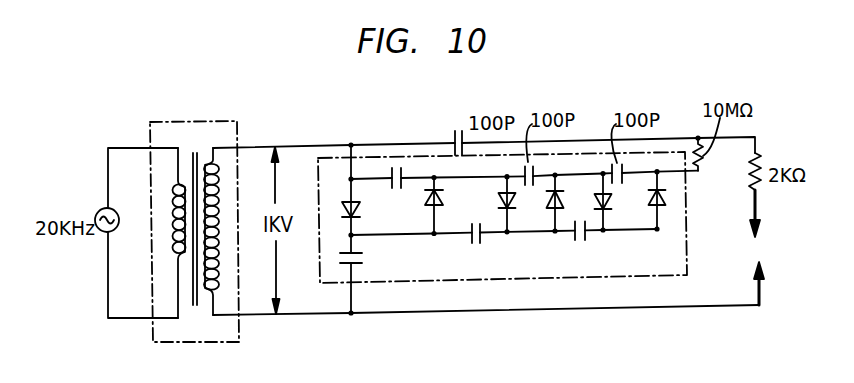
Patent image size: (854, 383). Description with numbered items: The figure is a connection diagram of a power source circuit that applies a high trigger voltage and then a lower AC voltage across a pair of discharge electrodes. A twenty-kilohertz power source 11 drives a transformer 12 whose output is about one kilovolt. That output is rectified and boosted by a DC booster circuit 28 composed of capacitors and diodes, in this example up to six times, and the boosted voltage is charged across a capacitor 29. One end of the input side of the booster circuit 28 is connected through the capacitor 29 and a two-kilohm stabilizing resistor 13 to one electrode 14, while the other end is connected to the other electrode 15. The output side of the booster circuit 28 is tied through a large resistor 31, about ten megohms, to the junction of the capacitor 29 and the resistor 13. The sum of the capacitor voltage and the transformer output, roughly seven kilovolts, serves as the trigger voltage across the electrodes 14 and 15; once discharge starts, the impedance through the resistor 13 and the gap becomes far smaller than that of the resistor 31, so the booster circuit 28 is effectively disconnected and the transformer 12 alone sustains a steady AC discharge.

The power source 11 is at (100, 211).
The transformer 12 is at (176, 122).
The stabilizing resistor 13 is at (761, 162).
The electrode 14 is at (762, 228).
The electrode 15 is at (763, 274).
The DC booster circuit 28 is at (606, 280).
The capacitor 29 is at (452, 140).
The resistor 31 is at (701, 171).